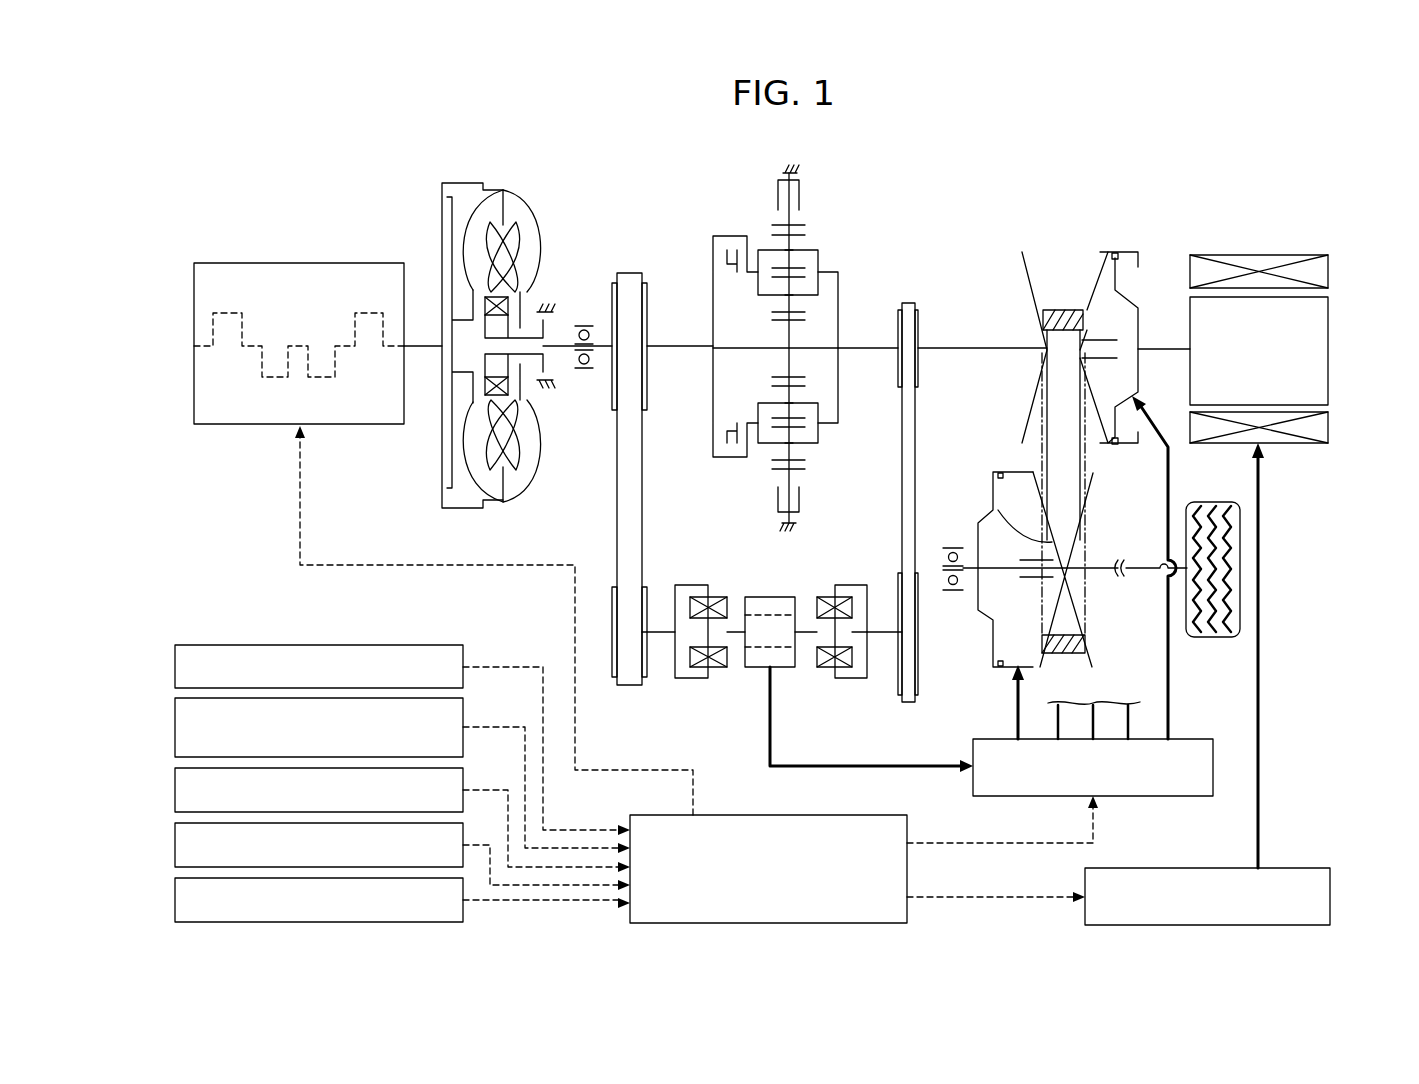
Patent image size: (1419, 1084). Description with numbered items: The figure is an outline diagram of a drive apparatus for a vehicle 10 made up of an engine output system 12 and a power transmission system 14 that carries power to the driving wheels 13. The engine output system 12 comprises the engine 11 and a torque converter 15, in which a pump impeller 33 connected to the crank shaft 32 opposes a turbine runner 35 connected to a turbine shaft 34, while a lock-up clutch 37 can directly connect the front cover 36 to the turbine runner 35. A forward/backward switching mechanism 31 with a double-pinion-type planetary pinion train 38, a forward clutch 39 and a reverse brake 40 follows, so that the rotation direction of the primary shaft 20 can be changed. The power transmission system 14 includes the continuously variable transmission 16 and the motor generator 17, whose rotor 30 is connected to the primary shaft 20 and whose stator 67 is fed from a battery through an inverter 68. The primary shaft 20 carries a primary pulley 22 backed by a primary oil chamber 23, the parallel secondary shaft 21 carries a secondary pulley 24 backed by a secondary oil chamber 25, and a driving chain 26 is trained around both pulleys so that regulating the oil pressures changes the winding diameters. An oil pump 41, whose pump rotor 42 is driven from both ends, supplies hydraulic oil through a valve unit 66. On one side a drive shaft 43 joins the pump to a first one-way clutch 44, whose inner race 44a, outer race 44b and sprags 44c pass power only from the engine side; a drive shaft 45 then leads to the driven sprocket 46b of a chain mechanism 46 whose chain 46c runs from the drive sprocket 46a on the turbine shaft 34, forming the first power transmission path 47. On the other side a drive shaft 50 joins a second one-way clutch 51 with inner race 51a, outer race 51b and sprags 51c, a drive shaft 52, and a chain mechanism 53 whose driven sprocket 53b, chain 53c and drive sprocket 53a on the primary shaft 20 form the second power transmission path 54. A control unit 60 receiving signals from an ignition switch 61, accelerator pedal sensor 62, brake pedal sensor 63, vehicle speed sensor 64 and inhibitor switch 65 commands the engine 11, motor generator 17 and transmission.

The drive apparatus for a vehicle 10 is at (250, 146).
The engine 11 is at (220, 426).
The engine output system 12 is at (339, 230).
The driving wheels 13 is at (1212, 502).
The power transmission system 14 is at (1283, 271).
The torque converter 15 is at (470, 309).
The continuously variable transmission 16 is at (1055, 395).
The motor generator 17 is at (1310, 232).
The primary shaft 20 is at (875, 346).
The secondary shaft 21 is at (1106, 566).
The primary pulley 22 is at (1104, 250).
The primary oil chamber 23 is at (1130, 306).
The secondary pulley 24 is at (998, 518).
The secondary oil chamber 25 is at (1000, 620).
The driving chain 26 is at (1066, 308).
The rotor 30 is at (1318, 336).
The forward/backward switching mechanism 31 is at (792, 339).
The crank shaft 32 is at (432, 352).
The pump impeller 33 is at (522, 224).
The turbine shaft 34 is at (560, 343).
The turbine runner 35 is at (480, 215).
The front cover 36 is at (442, 232).
The lock-up clutch 37 is at (444, 190).
The double-pinion-type planetary pinion train 38 is at (761, 464).
The forward clutch 39 is at (738, 240).
The reverse brake 40 is at (800, 190).
The oil pump 41 is at (786, 600).
The pump rotor 42 is at (757, 614).
The drive shaft 43 is at (770, 632).
The first one-way clutch 44 is at (697, 681).
The inner race 44a is at (738, 635).
The outer race 44b is at (693, 680).
The sprags 44c is at (710, 670).
The drive shaft 45 is at (660, 630).
The chain mechanism 46 is at (584, 480).
The drive sprocket 46a is at (612, 400).
The driven sprocket 46b is at (612, 586).
The chain 46c is at (617, 492).
The first power transmission path 47 is at (590, 421).
The drive shaft 50 is at (810, 630).
The second one-way clutch 51 is at (842, 681).
The inner race 51a is at (830, 672).
The outer race 51b is at (871, 680).
The sprags 51c is at (834, 670).
The drive shaft 52 is at (886, 632).
The chain mechanism 53 is at (865, 502).
The drive sprocket 53a is at (898, 386).
The driven sprocket 53b is at (898, 573).
The chain 53c is at (902, 480).
The second power transmission path 54 is at (872, 439).
The control unit 60 is at (858, 814).
The ignition switch 61 is at (175, 668).
The accelerator pedal sensor 62 is at (175, 725).
The brake pedal sensor 63 is at (175, 789).
The vehicle speed sensor 64 is at (175, 844).
The inhibitor switch 65 is at (175, 899).
The valve unit 66 is at (1178, 740).
The stator 67 is at (1318, 428).
The inverter 68 is at (1301, 869).